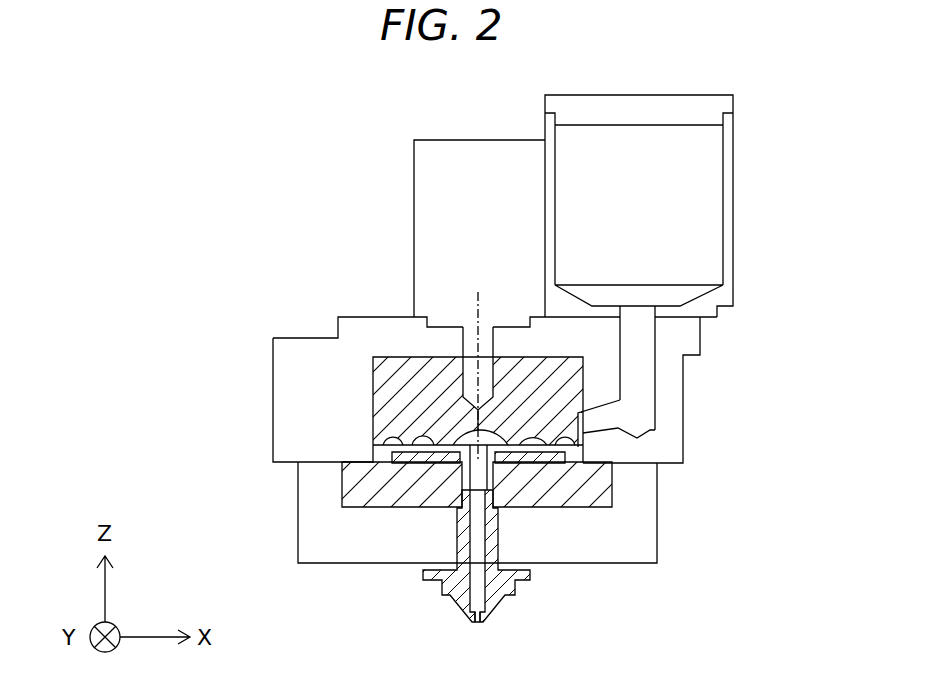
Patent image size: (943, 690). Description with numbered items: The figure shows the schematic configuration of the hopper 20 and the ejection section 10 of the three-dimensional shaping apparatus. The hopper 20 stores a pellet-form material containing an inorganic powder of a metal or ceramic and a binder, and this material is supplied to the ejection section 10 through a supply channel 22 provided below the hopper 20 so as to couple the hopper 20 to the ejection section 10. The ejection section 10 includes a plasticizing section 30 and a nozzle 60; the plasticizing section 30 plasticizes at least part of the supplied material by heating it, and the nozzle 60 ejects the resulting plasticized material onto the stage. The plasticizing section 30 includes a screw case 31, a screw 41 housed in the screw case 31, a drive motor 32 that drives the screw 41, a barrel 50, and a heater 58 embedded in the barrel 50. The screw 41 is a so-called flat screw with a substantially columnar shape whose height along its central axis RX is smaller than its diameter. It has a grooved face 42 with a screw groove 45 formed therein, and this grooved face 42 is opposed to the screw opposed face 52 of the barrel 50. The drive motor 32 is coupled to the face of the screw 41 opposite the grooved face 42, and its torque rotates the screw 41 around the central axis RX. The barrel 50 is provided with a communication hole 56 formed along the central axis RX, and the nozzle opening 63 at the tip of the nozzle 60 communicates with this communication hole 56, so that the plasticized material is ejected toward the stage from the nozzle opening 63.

The ejection section 10 is at (226, 150).
The hopper 20 is at (735, 198).
The supply channel 22 is at (635, 375).
The plasticizing section 30 is at (749, 339).
The screw case 31 is at (298, 338).
The drive motor 32 is at (414, 170).
The screw 41 is at (585, 410).
The grooved face 42 is at (373, 452).
The screw groove 45 is at (427, 436).
The barrel 50 is at (575, 487).
The screw opposed face 52 is at (457, 432).
The communication hole 56 is at (463, 477).
The heater 58 is at (470, 477).
The nozzle 60 is at (462, 607).
The nozzle opening 63 is at (478, 623).
The central axis RX is at (478, 292).